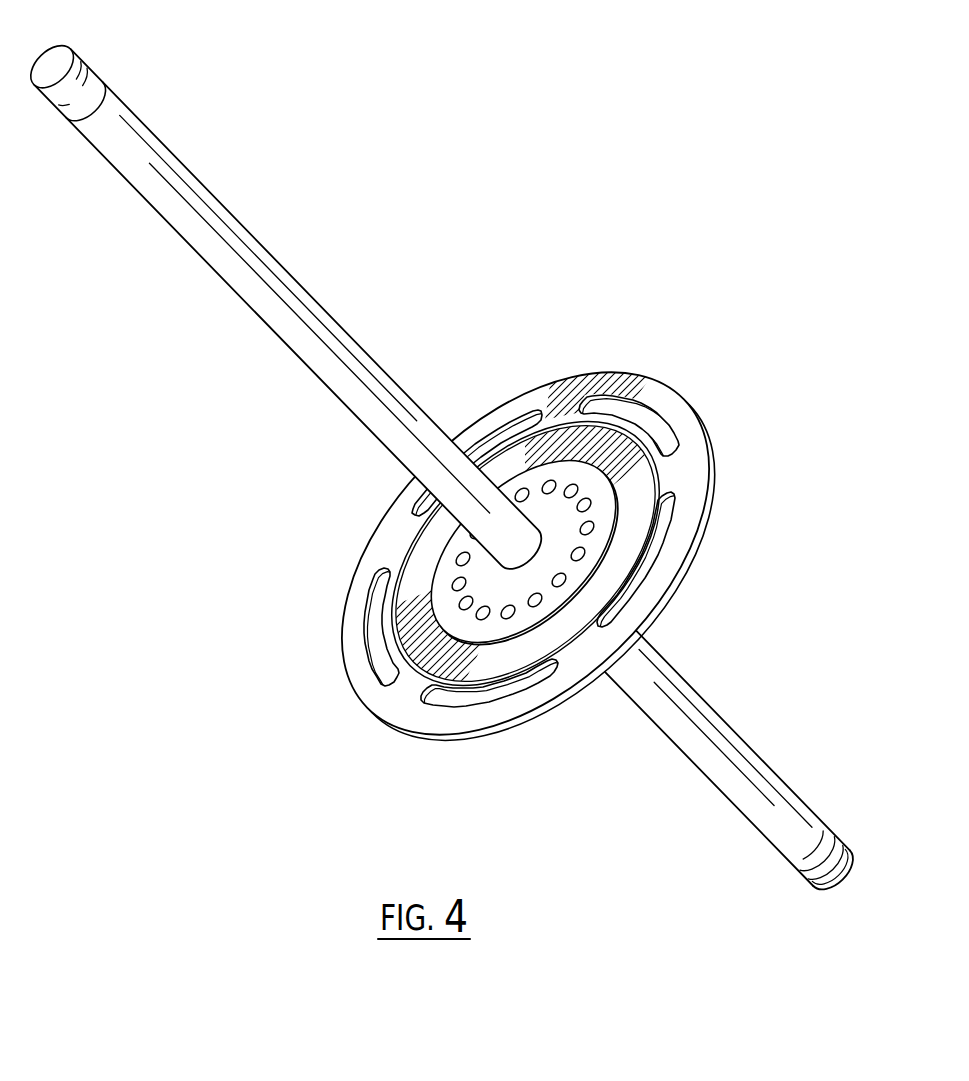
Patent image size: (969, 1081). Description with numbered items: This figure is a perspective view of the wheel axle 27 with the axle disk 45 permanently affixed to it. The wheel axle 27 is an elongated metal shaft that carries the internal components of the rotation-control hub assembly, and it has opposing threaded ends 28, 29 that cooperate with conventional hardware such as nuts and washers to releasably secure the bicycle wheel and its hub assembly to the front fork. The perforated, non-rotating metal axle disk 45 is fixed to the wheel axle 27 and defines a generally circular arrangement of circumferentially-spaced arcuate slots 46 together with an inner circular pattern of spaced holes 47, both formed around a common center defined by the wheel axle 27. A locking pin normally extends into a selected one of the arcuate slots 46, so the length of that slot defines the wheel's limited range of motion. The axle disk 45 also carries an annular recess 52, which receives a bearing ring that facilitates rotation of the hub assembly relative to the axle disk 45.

The wheel axle 27 is at (318, 315).
The threaded end 28 is at (97, 82).
The threaded end 29 is at (838, 840).
The axle disk 45 is at (683, 428).
The arcuate slots 46 is at (612, 407).
The holes 47 is at (455, 588).
The annular recess 52 is at (517, 447).